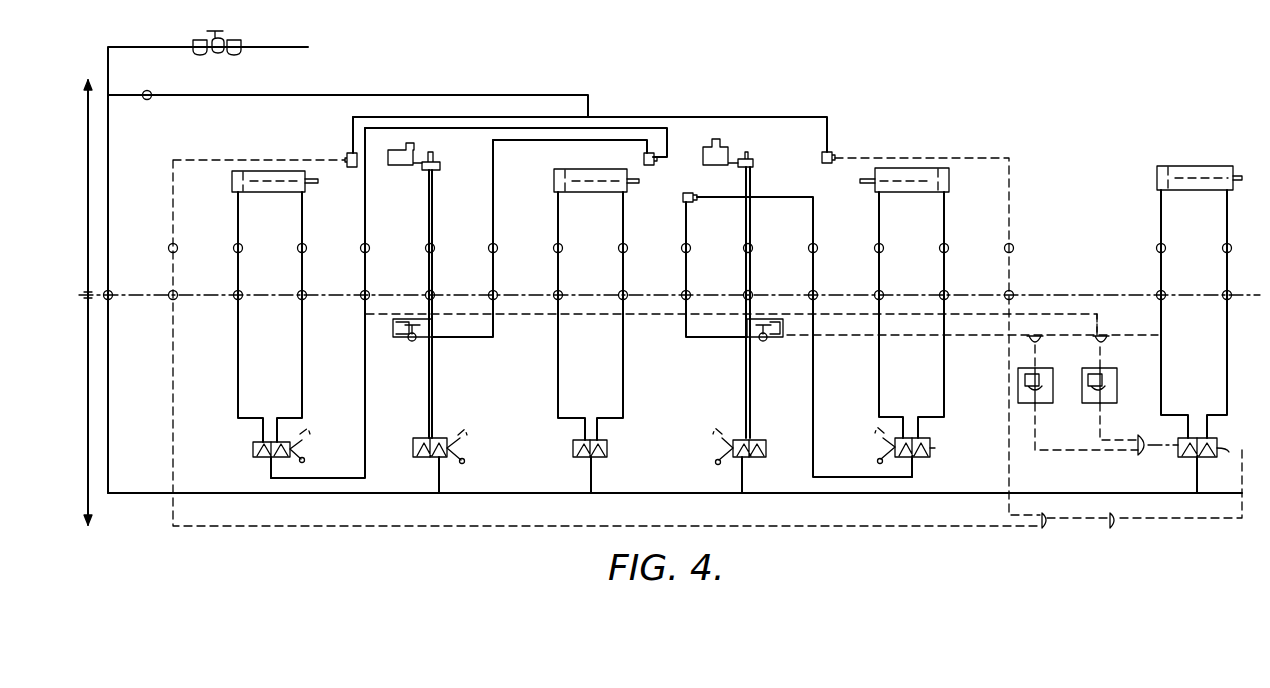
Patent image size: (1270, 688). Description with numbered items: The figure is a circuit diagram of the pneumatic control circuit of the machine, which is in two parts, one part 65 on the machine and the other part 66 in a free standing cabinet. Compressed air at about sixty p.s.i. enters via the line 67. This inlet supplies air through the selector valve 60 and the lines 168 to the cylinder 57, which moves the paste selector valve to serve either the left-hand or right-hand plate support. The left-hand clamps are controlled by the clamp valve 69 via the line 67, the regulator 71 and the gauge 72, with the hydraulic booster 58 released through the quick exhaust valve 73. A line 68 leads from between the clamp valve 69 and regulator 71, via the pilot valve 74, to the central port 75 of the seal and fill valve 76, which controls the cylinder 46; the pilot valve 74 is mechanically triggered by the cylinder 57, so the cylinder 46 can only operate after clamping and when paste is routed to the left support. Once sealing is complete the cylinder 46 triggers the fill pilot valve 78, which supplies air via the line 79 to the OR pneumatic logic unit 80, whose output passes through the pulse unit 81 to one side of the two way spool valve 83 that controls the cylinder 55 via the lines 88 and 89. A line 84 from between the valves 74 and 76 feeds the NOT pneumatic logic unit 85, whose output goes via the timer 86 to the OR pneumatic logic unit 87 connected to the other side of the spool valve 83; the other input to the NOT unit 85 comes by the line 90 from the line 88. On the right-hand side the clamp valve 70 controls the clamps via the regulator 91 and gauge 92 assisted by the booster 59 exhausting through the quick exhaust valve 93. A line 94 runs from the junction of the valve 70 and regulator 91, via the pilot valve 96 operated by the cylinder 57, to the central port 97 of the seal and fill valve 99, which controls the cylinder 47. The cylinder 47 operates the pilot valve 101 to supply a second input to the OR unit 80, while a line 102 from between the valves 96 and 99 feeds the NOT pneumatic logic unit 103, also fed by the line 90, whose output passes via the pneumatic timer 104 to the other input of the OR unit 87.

The cylinder 46 is at (278, 198).
The cylinder 47 is at (907, 196).
The cylinder 55 is at (1208, 160).
The cylinder 57 is at (606, 196).
The hydraulic booster 58 is at (409, 173).
The booster 59 is at (710, 162).
The selector valve 60 is at (608, 447).
The pneumatic control circuit part on the machine 65 is at (104, 117).
The pneumatic control circuit part in cabinet 66 is at (103, 417).
The line 67 is at (144, 48).
The line 68 is at (492, 276).
The clamp valve 69 is at (412, 448).
The clamp valve 70 is at (774, 441).
The regulator 71 is at (399, 340).
The gauge 72 is at (416, 340).
The quick exhaust valve 73 is at (438, 161).
The pilot valve 74 is at (656, 165).
The central port 75 is at (270, 466).
The seal and fill valve 76 is at (252, 448).
The fill pilot valve 78 is at (346, 153).
The line 79 is at (182, 530).
The OR pneumatic logic unit 80 is at (1045, 530).
The pulse unit 81 is at (1112, 528).
The two way spool valve 83 is at (1236, 444).
The line 84 is at (500, 315).
The NOT pneumatic logic unit 85 is at (1115, 313).
The timer 86 is at (1118, 380).
The OR pneumatic logic unit 87 is at (1147, 455).
The line 88 is at (1158, 278).
The line 89 is at (1225, 278).
The line 90 is at (1120, 332).
The regulator 91 is at (753, 343).
The gauge 92 is at (766, 341).
The quick exhaust valve 93 is at (748, 160).
The line 94 is at (686, 276).
The pilot valve 96 is at (682, 197).
The central port 97 is at (912, 460).
The seal and fill valve 99 is at (935, 448).
The pilot valve 101 is at (822, 160).
The line 102 is at (823, 337).
The NOT pneumatic logic unit 103 is at (1027, 341).
The pneumatic timer 104 is at (1017, 389).
The lines 168 is at (558, 352).